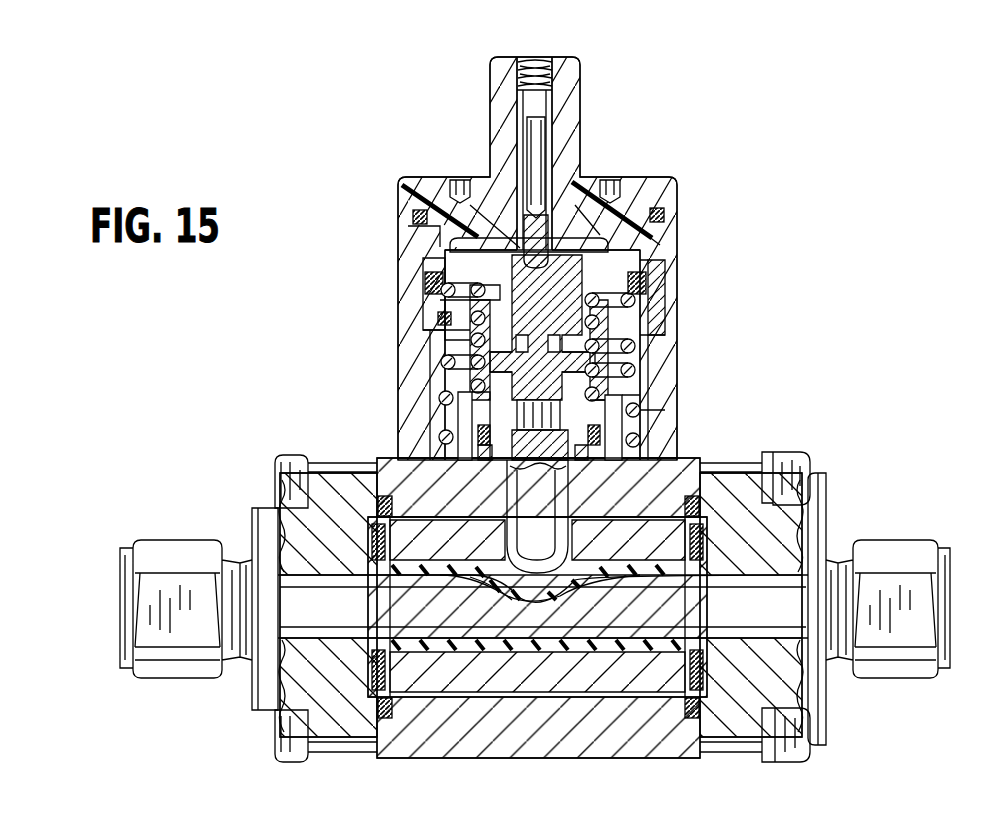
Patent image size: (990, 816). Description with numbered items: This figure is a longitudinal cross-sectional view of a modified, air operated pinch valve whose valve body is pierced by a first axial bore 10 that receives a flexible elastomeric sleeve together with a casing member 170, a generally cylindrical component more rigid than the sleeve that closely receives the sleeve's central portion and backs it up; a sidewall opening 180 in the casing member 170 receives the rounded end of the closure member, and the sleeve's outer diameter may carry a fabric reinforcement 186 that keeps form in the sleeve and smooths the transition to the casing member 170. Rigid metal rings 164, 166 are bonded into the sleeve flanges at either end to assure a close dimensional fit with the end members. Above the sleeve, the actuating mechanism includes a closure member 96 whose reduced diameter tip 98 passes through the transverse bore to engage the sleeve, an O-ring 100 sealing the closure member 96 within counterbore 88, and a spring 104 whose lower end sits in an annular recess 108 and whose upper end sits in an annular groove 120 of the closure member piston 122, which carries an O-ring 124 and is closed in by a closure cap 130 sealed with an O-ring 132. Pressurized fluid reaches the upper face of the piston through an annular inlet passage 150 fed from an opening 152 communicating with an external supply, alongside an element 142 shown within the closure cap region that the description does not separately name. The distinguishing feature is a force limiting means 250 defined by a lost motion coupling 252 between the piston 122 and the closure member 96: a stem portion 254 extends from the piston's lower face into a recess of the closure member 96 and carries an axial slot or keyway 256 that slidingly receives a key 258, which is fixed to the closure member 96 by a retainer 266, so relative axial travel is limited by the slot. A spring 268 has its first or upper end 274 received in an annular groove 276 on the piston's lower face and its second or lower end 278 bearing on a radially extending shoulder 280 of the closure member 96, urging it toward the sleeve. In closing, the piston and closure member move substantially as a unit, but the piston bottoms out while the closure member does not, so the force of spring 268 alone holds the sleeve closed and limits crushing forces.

The first axial bore 10 is at (613, 568).
The counterbore 88 is at (483, 497).
The closure member 96 is at (537, 567).
The reduced diameter tip 98 is at (522, 578).
The O-ring 100 is at (470, 465).
The spring 104 is at (643, 378).
The annular recess 108 is at (632, 432).
The annular groove 120 is at (440, 318).
The closure member piston 122 is at (455, 256).
The O-ring 124 is at (642, 283).
The closure cap 130 is at (498, 146).
The O-ring 132 is at (672, 213).
The stem 142 is at (540, 158).
The annular inlet passage 150 is at (548, 103).
The opening 152 is at (543, 62).
The rigid metal ring 164 is at (377, 653).
The rigid metal ring 166 is at (693, 647).
The casing member 170 is at (428, 680).
The sidewall opening 180 is at (548, 573).
The fabric reinforcement 186 is at (557, 653).
The force limiting means 250 is at (755, 258).
The lost motion coupling 252 is at (655, 312).
The stem portion 254 is at (648, 250).
The slot or keyway 256 is at (640, 352).
The key 258 is at (493, 382).
The retainer 266 is at (477, 350).
The spring 268 is at (480, 338).
The first or upper end 274 is at (497, 290).
The annular groove 276 is at (470, 298).
The second or lower end 278 is at (633, 397).
The radially extending shoulder 280 is at (485, 410).